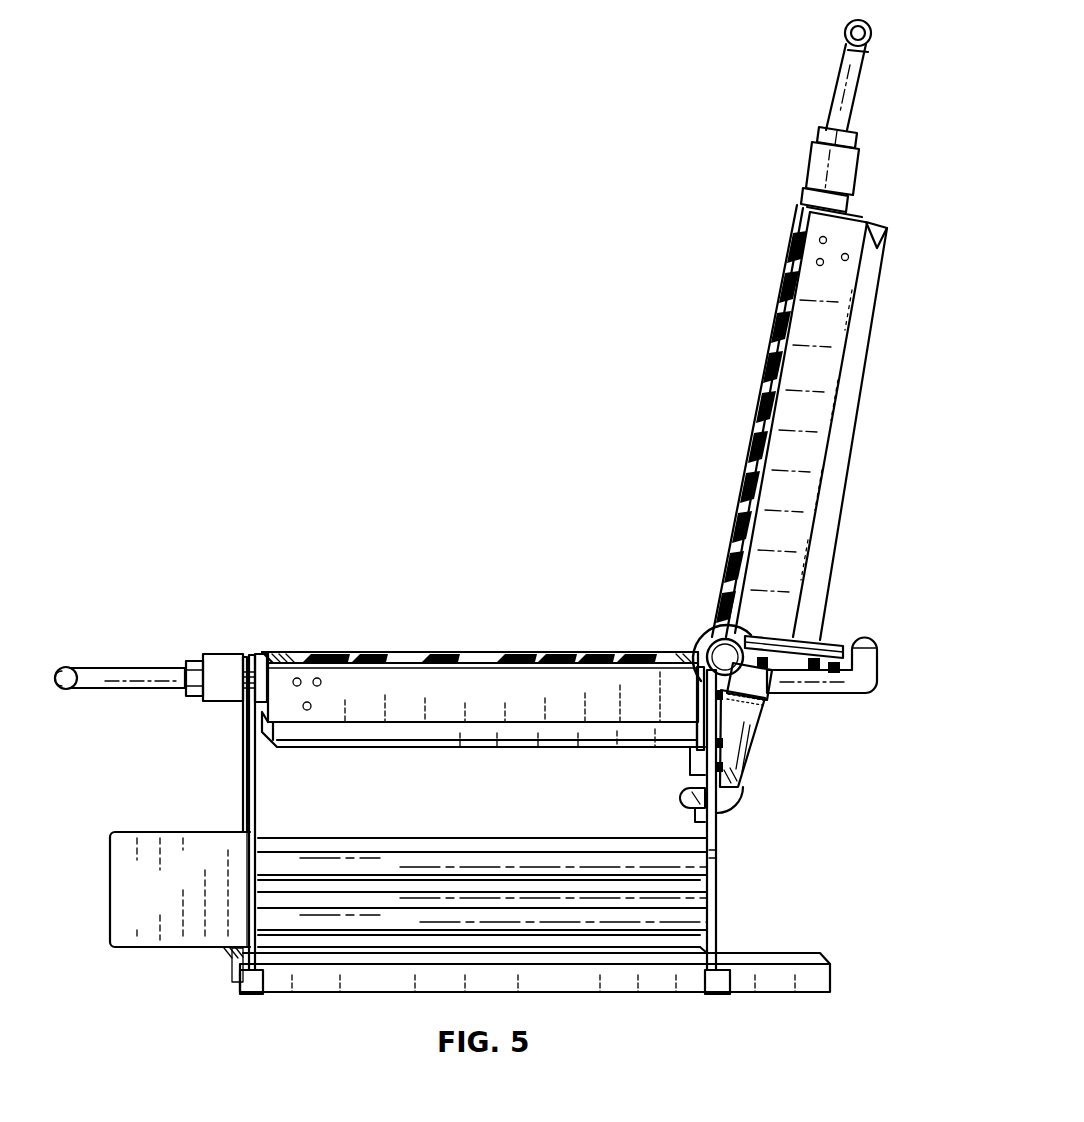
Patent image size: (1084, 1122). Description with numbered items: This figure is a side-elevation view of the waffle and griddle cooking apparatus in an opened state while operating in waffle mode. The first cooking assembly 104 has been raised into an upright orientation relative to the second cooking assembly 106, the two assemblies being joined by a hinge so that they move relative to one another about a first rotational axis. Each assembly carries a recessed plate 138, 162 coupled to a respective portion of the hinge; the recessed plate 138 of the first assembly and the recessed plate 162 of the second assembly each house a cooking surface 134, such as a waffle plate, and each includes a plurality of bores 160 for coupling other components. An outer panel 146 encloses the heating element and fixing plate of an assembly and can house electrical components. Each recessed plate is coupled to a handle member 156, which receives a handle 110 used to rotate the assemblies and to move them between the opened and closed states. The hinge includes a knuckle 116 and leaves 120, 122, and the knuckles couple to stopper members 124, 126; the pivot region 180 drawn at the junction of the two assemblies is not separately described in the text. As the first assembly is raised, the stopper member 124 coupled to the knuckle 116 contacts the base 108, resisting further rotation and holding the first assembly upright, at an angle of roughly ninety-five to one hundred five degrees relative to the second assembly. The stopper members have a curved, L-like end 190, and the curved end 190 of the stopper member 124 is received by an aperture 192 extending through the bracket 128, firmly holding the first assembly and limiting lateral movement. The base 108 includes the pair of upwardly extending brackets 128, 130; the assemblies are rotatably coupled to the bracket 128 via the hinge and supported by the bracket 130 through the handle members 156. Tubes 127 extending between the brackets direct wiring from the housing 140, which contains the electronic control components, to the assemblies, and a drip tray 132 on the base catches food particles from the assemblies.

The first cooking assembly 104 is at (844, 423).
The second cooking assembly 106 is at (483, 676).
The base 108 is at (322, 858).
The handle 110 is at (862, 72).
The knuckle 116 is at (758, 690).
The leaf 120 is at (832, 642).
The leaf 122 is at (745, 754).
The stopper member 124 is at (697, 756).
The stopper member 126 is at (866, 680).
The tube 127 is at (462, 864).
The bracket 128 is at (722, 845).
The bracket 130 is at (250, 790).
The drip tray 132 is at (772, 957).
The cooking surface 134 is at (772, 380).
The recessed plate 138 is at (835, 382).
The housing 140 is at (130, 832).
The outer panel 146 is at (832, 495).
The handle member 156 is at (838, 165).
The bores 160 is at (849, 257).
The recessed plate 162 is at (543, 678).
The hinge 180 is at (700, 640).
The curved end 190 is at (688, 787).
The aperture 192 is at (697, 820).